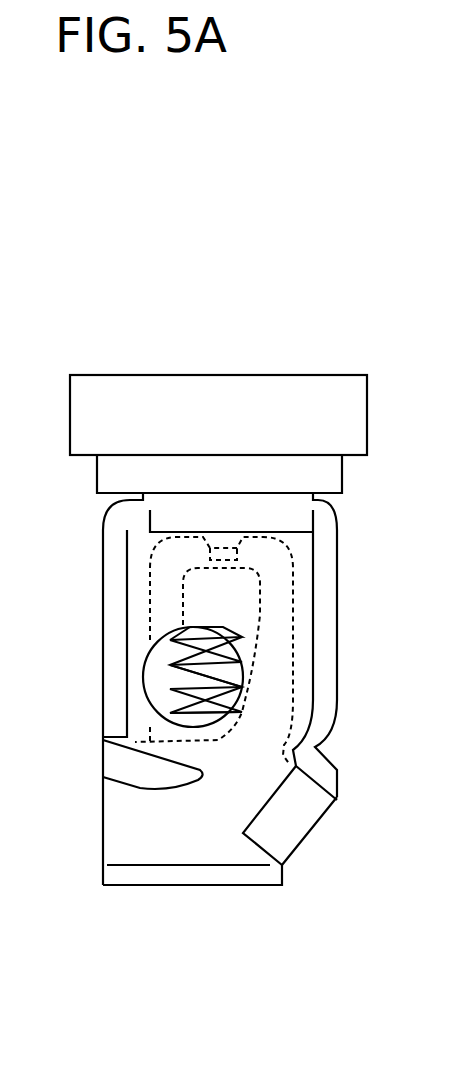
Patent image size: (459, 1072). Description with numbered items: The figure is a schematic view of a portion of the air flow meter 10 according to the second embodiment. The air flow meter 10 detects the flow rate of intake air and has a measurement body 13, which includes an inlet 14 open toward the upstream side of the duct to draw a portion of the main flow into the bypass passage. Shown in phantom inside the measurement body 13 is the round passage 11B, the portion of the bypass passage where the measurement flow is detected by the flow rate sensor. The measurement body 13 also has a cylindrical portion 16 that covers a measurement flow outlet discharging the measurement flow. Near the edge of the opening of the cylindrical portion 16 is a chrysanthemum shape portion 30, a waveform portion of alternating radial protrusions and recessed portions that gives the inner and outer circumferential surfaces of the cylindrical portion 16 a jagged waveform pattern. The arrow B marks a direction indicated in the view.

The air flow meter 10 is at (263, 374).
The measurement body 13 is at (103, 537).
The inlet 14 is at (103, 820).
The round passage 11B is at (277, 572).
The cylindrical portion 16 is at (166, 639).
The chrysanthemum shape portion 30 is at (242, 636).
The direction B is at (284, 677).